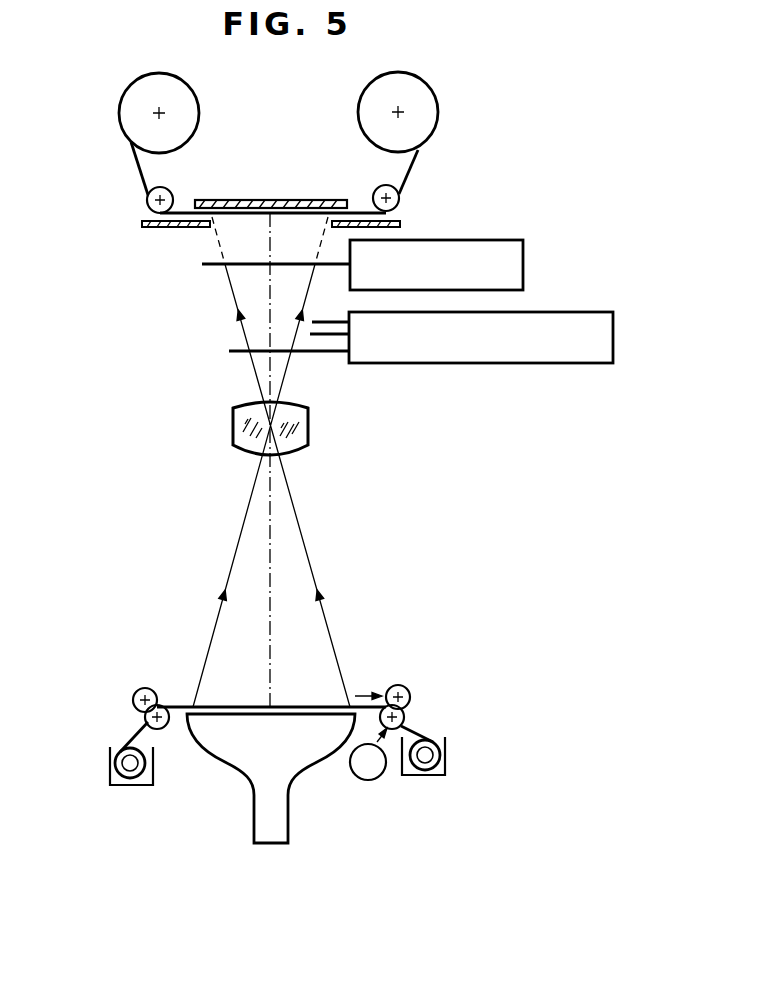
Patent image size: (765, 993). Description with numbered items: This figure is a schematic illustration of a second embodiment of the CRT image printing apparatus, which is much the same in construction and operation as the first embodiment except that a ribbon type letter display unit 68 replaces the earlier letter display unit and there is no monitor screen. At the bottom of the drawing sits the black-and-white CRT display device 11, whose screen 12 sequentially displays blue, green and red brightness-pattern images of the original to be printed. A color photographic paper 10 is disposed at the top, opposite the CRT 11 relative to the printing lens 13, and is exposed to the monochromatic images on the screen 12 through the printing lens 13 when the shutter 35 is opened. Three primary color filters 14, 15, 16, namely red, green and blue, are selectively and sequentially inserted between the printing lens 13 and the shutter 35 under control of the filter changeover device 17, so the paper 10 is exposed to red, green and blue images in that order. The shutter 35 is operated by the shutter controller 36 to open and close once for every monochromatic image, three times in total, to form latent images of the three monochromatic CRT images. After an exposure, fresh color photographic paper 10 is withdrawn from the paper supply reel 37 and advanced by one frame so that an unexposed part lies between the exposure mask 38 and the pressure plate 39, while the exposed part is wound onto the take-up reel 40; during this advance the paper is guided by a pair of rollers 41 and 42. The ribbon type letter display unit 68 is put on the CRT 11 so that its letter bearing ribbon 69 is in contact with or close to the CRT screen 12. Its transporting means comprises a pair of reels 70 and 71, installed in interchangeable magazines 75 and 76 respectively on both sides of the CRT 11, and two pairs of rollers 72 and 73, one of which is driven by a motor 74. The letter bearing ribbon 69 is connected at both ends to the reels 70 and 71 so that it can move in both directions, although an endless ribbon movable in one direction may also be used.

The color photographic paper 10 is at (304, 203).
The CRT display device 11 is at (230, 778).
The screen 12 is at (303, 706).
The printing lens 13 is at (236, 426).
The red filter 14 is at (231, 352).
The green filter 15 is at (337, 336).
The blue filter 16 is at (319, 324).
The filter changeover device 17 is at (468, 364).
The shutter 35 is at (204, 266).
The shutter controller 36 is at (523, 262).
The paper supply reel 37 is at (120, 113).
The exposure mask 38 is at (155, 228).
The pressure plate 39 is at (240, 199).
The take-up reel 40 is at (428, 110).
The roller 41 is at (147, 202).
The roller 42 is at (399, 202).
The ribbon type letter display unit 68 is at (373, 662).
The letter bearing ribbon 69 is at (410, 724).
The reel 70 is at (425, 771).
The reel 71 is at (130, 779).
The rollers 72 is at (399, 685).
The rollers 73 is at (146, 688).
The motor 74 is at (369, 781).
The interchangeable magazine 75 is at (446, 757).
The interchangeable magazine 76 is at (110, 765).